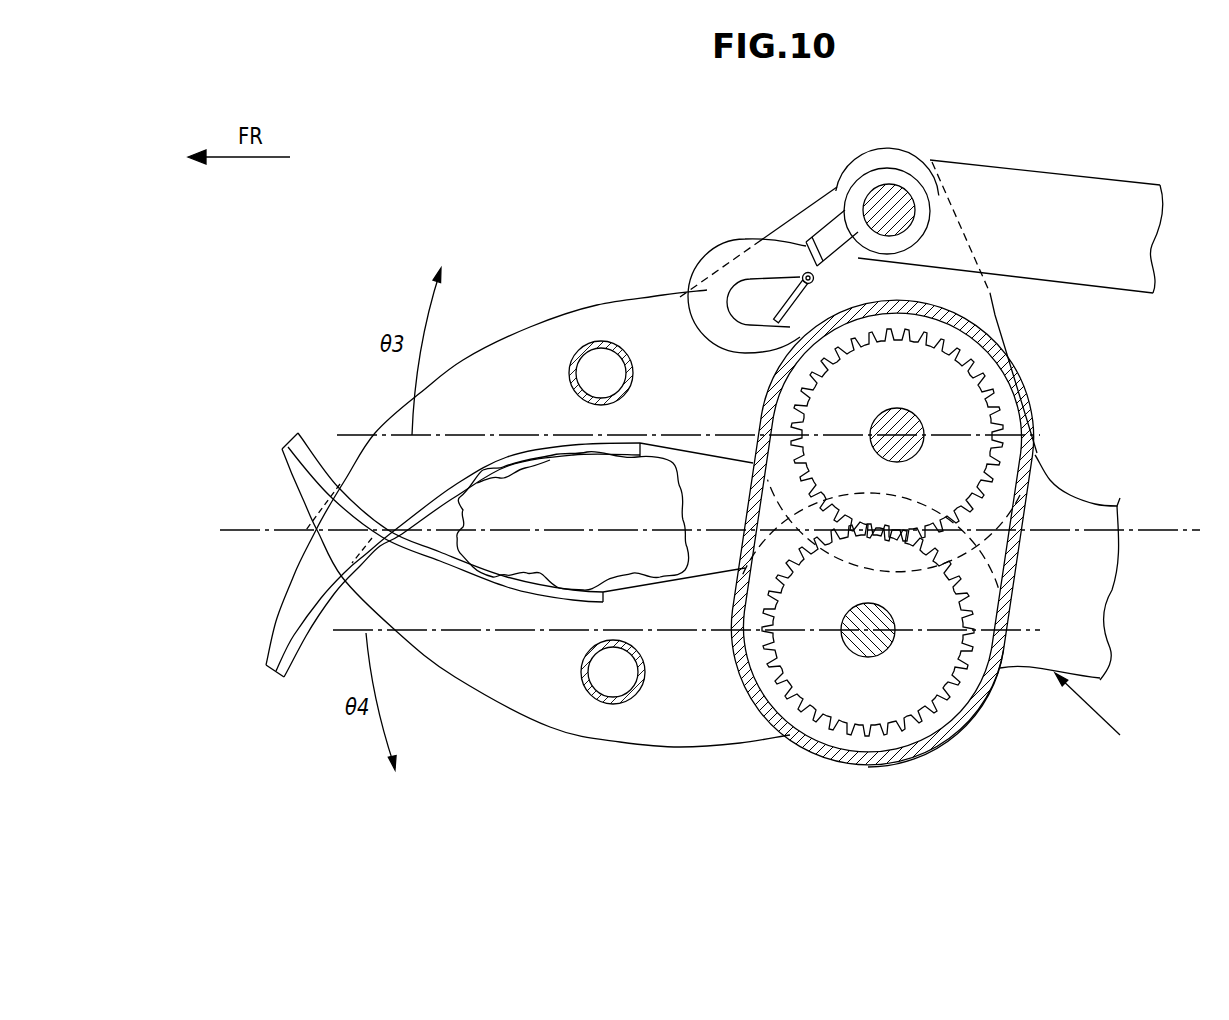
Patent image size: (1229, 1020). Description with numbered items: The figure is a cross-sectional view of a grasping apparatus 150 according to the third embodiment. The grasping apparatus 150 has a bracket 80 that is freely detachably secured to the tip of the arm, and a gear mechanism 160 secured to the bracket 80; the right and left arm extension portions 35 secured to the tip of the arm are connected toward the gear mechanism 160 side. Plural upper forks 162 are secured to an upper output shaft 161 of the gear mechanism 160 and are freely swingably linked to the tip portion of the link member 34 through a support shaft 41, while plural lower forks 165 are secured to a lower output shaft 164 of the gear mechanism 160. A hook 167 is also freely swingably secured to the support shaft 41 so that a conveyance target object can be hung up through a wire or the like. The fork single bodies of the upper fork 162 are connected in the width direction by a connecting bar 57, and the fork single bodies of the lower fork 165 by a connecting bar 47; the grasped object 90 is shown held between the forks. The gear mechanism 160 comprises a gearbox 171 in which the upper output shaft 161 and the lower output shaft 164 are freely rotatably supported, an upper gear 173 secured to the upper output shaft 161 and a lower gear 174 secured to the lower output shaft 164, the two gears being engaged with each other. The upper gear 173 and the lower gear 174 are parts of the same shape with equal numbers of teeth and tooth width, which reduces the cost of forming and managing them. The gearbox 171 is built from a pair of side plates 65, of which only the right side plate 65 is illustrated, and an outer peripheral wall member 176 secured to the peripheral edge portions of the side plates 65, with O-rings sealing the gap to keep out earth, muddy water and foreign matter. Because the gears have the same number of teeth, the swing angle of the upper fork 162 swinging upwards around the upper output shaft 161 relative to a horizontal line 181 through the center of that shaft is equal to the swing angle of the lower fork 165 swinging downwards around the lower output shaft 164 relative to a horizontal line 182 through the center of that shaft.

The grasping apparatus 150 is at (548, 216).
The upper fork 162 is at (540, 350).
The lower fork 165 is at (548, 695).
The horizontal line 181 is at (350, 435).
The horizontal line 182 is at (354, 632).
The connecting bar 57 is at (602, 341).
The connecting bar 47 is at (610, 705).
The cut object 90 is at (523, 577).
The gearbox 171 is at (748, 705).
The upper gear 173 is at (1040, 475).
The outer peripheral wall member 176 is at (968, 732).
The side plate 65 is at (968, 677).
The gear mechanism 160 is at (995, 378).
The upper output shaft 161 is at (935, 437).
The lower gear 174 is at (905, 690).
The lower output shaft 164 is at (862, 648).
The hook 167 is at (712, 262).
The support shaft 41 is at (884, 200).
The link member 34 is at (1085, 200).
The arm extension portion 35 is at (1076, 606).
The bracket 80 is at (1099, 713).